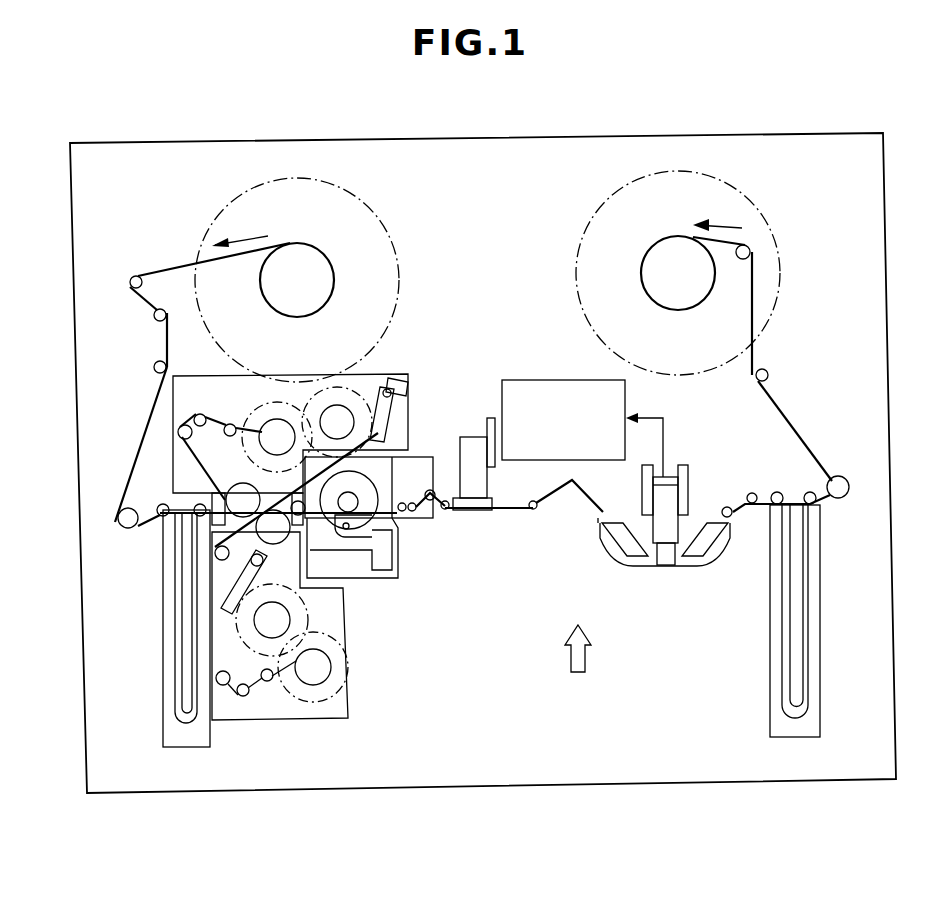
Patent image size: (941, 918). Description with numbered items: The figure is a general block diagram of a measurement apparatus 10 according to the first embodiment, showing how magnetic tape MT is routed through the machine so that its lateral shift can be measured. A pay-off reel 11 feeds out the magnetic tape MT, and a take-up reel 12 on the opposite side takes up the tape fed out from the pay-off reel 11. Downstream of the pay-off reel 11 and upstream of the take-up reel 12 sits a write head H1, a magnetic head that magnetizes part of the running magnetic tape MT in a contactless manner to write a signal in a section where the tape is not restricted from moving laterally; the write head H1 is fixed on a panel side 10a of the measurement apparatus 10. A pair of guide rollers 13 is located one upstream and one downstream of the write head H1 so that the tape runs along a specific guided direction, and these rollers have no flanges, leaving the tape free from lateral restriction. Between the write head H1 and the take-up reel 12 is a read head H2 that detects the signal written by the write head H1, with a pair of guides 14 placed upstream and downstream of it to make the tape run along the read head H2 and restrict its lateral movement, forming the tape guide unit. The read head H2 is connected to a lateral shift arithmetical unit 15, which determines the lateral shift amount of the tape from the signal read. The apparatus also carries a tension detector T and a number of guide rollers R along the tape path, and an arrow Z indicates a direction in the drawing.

The measurement apparatus 10 is at (492, 232).
The panel side 10a is at (387, 700).
The pay-off reel 11 is at (297, 265).
The take-up reel 12 is at (678, 262).
The guide rollers 13 is at (447, 512).
The guides 14 is at (623, 545).
The lateral shift arithmetical unit 15 is at (533, 380).
The write head H1 is at (478, 512).
The read head H2 is at (665, 567).
The magnetic tape MT is at (177, 263).
The guide rollers R is at (154, 315).
The tension detector T is at (150, 640).
The tape running direction Z is at (578, 665).